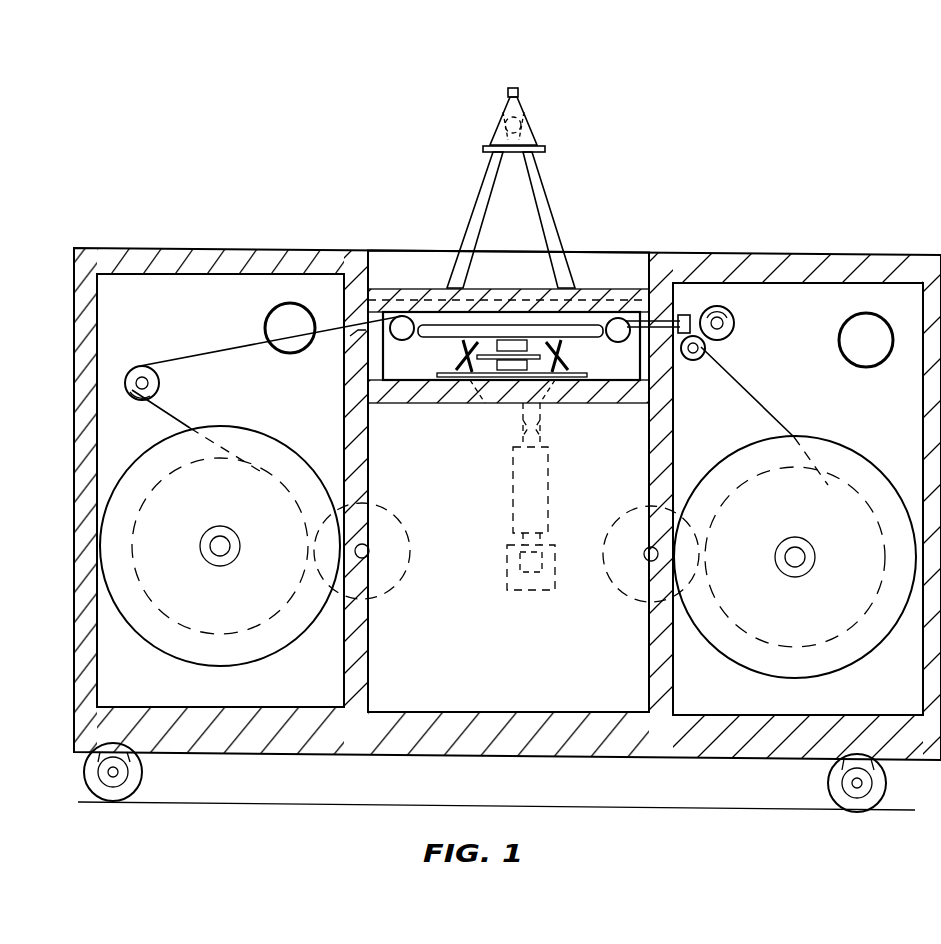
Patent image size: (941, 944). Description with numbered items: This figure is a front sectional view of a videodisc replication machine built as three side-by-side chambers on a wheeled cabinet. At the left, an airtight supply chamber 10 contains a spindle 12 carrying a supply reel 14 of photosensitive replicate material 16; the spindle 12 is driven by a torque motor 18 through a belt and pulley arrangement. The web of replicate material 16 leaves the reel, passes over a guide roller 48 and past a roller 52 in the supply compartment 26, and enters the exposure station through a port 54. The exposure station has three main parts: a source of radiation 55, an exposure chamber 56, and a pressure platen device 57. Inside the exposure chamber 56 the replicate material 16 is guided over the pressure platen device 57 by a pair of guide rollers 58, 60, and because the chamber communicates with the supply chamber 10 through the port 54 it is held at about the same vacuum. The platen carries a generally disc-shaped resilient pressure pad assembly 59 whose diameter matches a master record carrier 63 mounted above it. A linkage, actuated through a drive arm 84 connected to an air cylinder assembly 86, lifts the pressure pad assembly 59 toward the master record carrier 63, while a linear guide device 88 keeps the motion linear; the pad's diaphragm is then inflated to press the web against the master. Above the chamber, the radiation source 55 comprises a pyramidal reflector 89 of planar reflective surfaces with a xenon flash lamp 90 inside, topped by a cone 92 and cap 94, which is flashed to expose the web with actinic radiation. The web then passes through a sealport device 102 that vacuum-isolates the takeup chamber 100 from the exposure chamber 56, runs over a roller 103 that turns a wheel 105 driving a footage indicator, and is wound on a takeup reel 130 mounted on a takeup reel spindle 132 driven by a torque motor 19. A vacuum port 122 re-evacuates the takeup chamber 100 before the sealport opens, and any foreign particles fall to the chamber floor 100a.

The supply chamber 10 is at (98, 683).
The spindle 12 is at (220, 537).
The supply reel 14 is at (318, 640).
The replicate material 16 is at (184, 420).
The torque motor 18 is at (392, 525).
The torque motor 19 is at (618, 520).
The supply compartment 26 is at (150, 302).
The guide roller 48 is at (160, 386).
The roller 52 is at (300, 320).
The port 54 is at (355, 330).
The source of radiation 55 is at (549, 167).
The exposure chamber 56 is at (508, 357).
The pressure platen device 57 is at (450, 348).
The guide roller 58 is at (403, 312).
The pressure pad assembly 59 is at (507, 326).
The guide roller 60 is at (628, 336).
The master record carrier 63 is at (597, 305).
The drive arm 84 is at (503, 398).
The air cylinder assembly 86 is at (549, 470).
The linear guide device 88 is at (535, 395).
The reflector 89 is at (533, 218).
The xenon flash lamp 90 is at (527, 125).
The cone 92 is at (505, 112).
The cap 94 is at (520, 88).
The takeup chamber 100 is at (798, 499).
The chamber floor 100a is at (722, 714).
The sealport device 102 is at (686, 308).
The roller 103 is at (695, 360).
The wheel 105 is at (731, 325).
The vacuum port 122 is at (853, 330).
The takeup reel 130 is at (770, 450).
The takeup reel spindle 132 is at (795, 548).